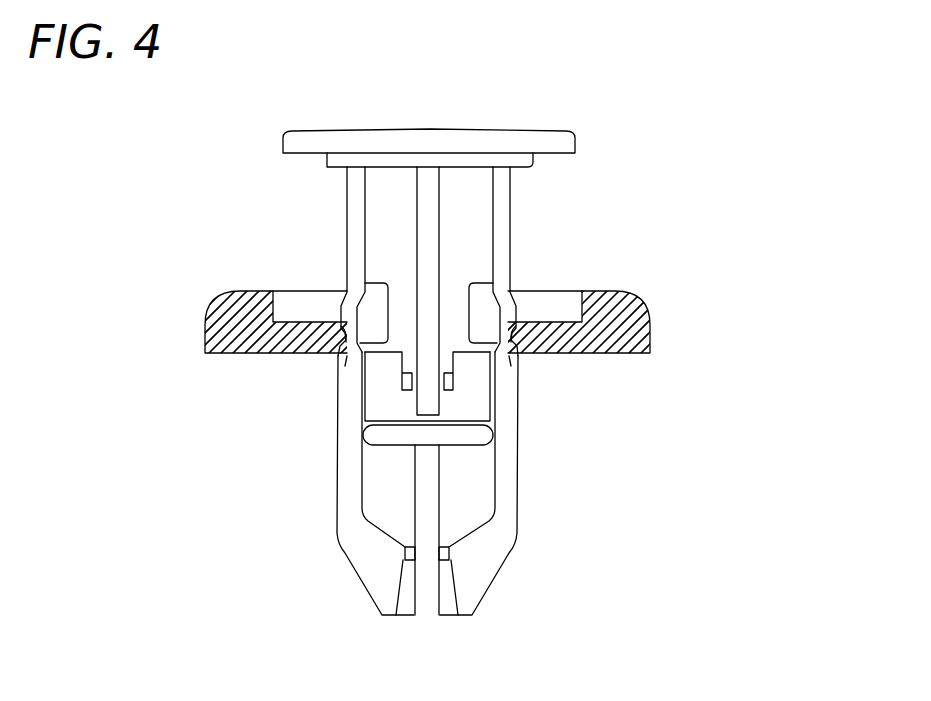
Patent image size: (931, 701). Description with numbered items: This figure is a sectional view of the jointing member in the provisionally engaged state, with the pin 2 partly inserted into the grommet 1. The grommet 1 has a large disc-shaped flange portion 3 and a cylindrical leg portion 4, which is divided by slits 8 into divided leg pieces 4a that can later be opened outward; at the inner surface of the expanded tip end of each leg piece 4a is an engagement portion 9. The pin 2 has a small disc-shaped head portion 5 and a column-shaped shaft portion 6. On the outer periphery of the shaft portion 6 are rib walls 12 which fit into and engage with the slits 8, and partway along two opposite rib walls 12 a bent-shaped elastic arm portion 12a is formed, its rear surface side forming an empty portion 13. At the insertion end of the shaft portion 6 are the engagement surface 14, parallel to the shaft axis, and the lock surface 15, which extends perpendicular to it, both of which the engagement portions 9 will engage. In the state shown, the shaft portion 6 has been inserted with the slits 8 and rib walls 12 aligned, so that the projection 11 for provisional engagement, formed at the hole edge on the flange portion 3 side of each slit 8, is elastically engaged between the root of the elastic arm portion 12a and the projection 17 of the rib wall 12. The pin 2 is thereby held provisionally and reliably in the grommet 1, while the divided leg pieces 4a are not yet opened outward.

The grommet 1 is at (400, 483).
The pin 2 is at (417, 236).
The flange portion 3 is at (236, 299).
The leg portion 4 is at (520, 453).
The divided leg piece 4a is at (345, 537).
The head portion 5 is at (518, 129).
The shaft portion 6 is at (485, 182).
The slit 8 is at (433, 492).
The engagement portion 9 is at (404, 556).
The projection for provisional engagement 11 is at (330, 341).
The rib wall 12 is at (346, 206).
The elastic arm portion 12a is at (340, 310).
The empty portion 13 is at (378, 284).
The engagement surface 14 is at (385, 420).
The lock surface 15 is at (385, 440).
The projection 17 is at (347, 356).